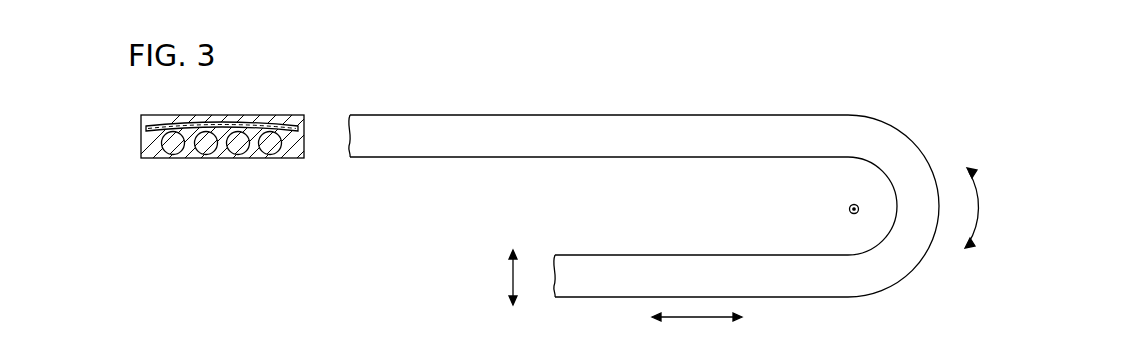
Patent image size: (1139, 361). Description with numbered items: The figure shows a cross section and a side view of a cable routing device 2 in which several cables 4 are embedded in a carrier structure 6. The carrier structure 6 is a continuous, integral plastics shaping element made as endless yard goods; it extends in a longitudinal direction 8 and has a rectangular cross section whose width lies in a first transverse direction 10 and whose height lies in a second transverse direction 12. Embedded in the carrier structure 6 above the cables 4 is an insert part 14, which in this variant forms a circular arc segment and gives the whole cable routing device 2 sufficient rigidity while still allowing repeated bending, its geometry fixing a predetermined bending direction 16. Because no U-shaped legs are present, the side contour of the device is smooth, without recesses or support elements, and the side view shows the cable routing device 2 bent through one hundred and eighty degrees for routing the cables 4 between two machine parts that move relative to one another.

The cable routing device 2 is at (281, 197).
The cables 4 is at (177, 146).
The carrier structure 6 is at (147, 140).
The longitudinal direction 8 is at (696, 318).
The first transverse direction 10 is at (855, 214).
The second transverse direction 12 is at (513, 272).
The insert part 14 is at (252, 120).
The bending direction 16 is at (993, 205).